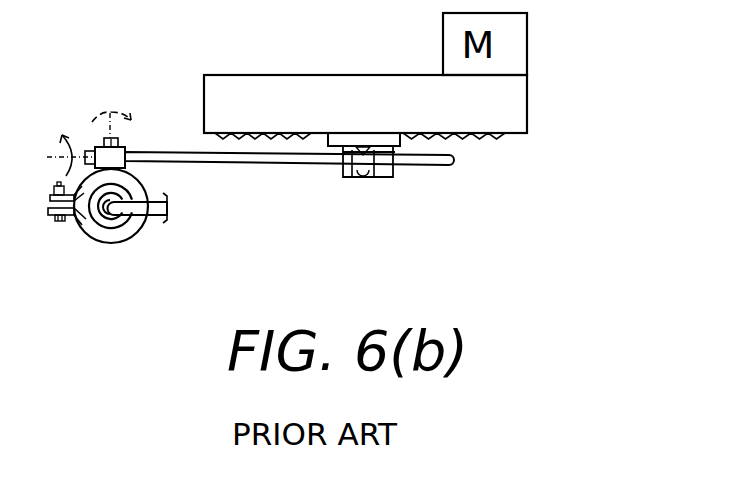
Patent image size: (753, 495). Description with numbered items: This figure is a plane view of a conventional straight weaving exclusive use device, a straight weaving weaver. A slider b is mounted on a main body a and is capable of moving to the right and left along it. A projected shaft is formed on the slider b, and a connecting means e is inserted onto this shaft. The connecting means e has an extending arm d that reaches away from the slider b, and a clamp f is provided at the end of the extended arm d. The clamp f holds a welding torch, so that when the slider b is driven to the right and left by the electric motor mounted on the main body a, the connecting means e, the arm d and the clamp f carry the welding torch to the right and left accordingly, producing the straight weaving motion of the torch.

The main body a is at (318, 97).
The slider b is at (378, 133).
The extending arm d is at (262, 163).
The connecting means e is at (382, 177).
The clamp f is at (97, 238).